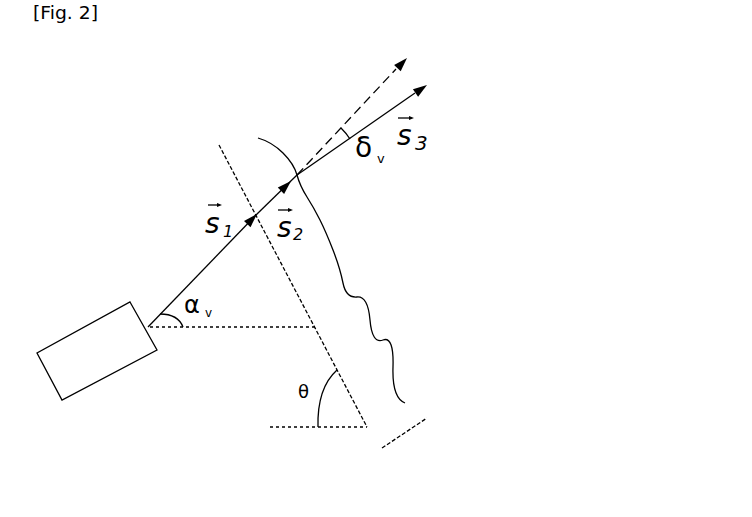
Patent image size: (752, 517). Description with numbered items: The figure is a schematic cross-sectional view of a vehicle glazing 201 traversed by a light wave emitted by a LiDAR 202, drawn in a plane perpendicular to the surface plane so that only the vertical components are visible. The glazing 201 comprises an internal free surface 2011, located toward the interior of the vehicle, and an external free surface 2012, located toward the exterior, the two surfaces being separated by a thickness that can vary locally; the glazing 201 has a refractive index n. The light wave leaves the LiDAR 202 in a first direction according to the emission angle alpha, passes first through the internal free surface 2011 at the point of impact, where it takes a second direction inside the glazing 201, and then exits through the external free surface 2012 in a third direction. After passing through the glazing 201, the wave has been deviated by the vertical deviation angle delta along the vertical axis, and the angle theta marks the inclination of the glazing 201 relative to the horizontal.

The glazing 201 is at (326, 311).
The internal free surface 2011 is at (232, 181).
The external free surface 2012 is at (411, 382).
The LiDAR 202 is at (97, 372).